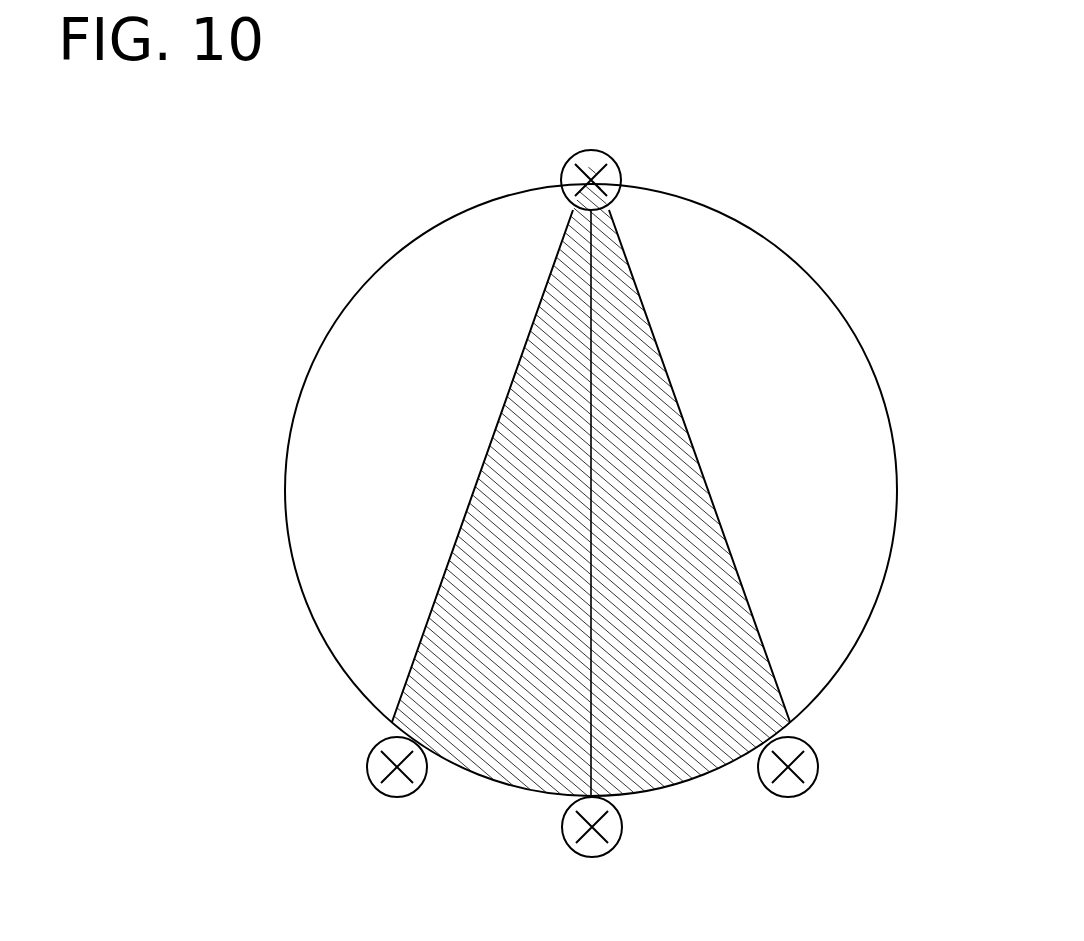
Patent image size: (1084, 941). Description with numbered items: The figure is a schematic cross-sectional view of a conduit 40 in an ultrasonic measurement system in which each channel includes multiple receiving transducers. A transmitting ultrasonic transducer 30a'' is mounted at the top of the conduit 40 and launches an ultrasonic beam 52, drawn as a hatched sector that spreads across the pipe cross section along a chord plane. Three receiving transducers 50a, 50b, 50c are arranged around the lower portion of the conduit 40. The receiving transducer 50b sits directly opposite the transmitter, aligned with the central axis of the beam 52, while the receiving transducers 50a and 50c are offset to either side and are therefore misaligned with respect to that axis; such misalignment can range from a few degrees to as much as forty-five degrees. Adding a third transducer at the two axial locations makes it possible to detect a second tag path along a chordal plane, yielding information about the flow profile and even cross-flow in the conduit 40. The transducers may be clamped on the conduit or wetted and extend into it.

The conduit 40 is at (249, 572).
The beam 52 is at (690, 423).
The ultrasonic transducer 30a'' is at (490, 146).
The receiving transducer 50a is at (417, 788).
The receiving transducer 50b is at (622, 827).
The receiving transducer 50c is at (817, 753).